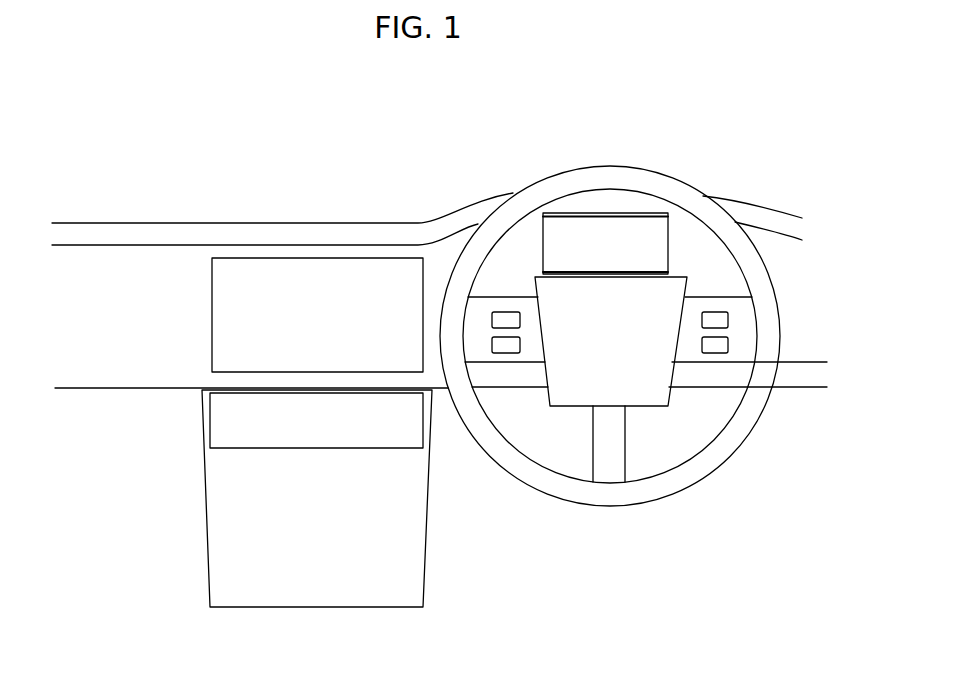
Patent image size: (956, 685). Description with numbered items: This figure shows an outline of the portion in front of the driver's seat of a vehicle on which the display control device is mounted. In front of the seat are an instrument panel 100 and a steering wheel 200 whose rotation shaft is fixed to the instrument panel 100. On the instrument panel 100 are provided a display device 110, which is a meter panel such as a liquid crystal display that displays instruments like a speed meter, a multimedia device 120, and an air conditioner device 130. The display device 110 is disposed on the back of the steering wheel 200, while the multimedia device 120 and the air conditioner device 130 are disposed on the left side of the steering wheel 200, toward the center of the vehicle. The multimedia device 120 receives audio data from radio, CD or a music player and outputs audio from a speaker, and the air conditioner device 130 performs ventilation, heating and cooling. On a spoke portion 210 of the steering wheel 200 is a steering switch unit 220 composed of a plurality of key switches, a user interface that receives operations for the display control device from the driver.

The instrument panel 100 is at (370, 227).
The display device 110 is at (613, 237).
The multimedia device 120 is at (268, 312).
The air conditioner device 130 is at (257, 427).
The steering wheel 200 is at (733, 435).
The spoke portion 210 is at (742, 312).
The steering switch unit 220 is at (510, 347).